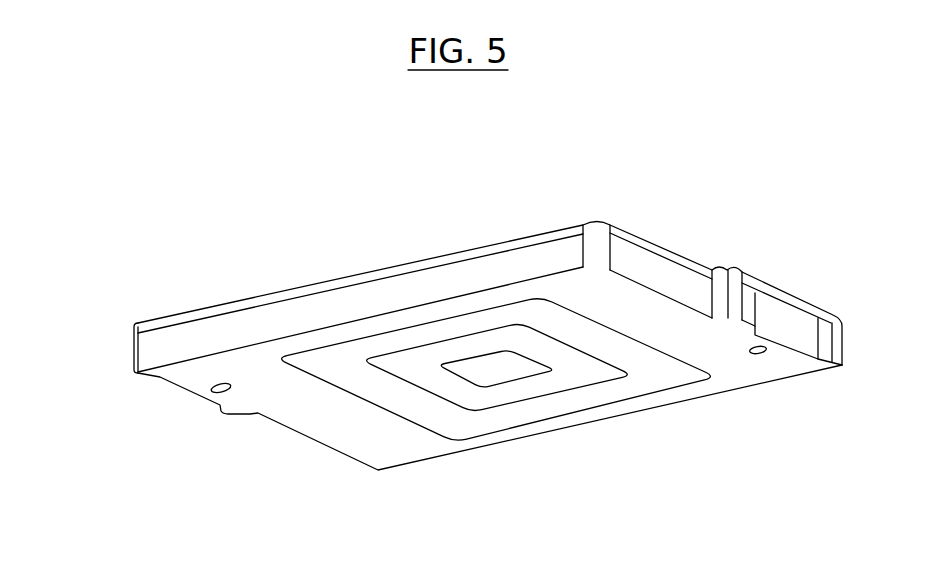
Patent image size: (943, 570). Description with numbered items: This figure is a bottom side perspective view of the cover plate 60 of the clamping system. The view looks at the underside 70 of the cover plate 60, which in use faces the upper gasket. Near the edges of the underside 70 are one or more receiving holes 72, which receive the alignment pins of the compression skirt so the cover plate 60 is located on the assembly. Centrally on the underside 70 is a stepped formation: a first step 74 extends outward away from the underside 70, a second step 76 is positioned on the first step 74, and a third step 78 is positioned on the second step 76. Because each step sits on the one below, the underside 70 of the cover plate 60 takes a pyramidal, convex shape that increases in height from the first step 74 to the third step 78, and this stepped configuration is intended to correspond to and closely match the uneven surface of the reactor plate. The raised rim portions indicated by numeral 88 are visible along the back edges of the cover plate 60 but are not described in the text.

The cover plate 60 is at (555, 243).
The underside 70 is at (747, 372).
The receiving holes 72 is at (212, 389).
The first step 74 is at (619, 387).
The second step 76 is at (453, 395).
The third step 78 is at (470, 363).
The wall segments 88 is at (167, 382).